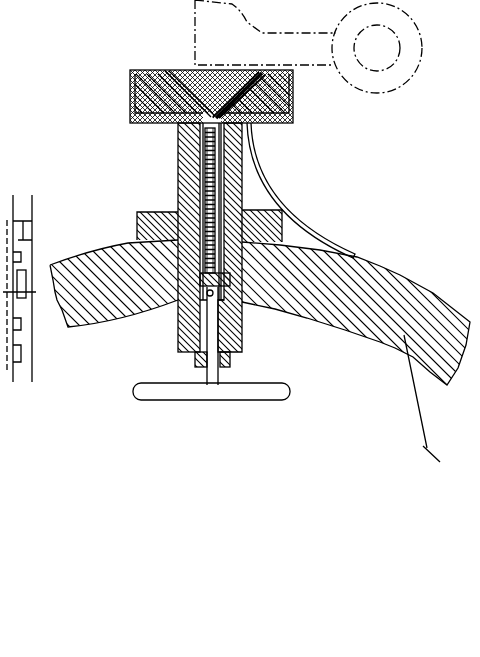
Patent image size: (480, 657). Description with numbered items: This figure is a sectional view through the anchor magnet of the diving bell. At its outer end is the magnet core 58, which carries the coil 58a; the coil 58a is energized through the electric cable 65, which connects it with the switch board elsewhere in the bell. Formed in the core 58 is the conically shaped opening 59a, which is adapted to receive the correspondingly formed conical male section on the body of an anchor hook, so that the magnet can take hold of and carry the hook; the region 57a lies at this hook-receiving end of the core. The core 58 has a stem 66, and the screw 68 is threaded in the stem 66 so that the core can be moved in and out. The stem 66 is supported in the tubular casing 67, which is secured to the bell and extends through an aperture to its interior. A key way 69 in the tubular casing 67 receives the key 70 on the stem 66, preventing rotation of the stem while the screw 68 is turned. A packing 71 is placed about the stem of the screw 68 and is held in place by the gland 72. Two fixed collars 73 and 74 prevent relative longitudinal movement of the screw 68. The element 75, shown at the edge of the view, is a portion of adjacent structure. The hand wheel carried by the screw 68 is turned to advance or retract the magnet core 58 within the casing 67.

The lever arm with ring end 57a is at (306, 67).
The magnet core 58 is at (291, 89).
The coil 58a is at (253, 137).
The opening in the core 59a is at (220, 128).
The electric cable 65 is at (260, 163).
The stem 66 is at (196, 162).
The tubular casing 67 is at (178, 175).
The screw 68 is at (207, 197).
The key way 69 is at (228, 282).
The key 70 is at (222, 292).
The packing 71 is at (240, 302).
The gland 72 is at (268, 398).
The fixed collar 73 is at (196, 359).
The fixed collar 74 is at (177, 315).
The side strip 75 is at (18, 210).